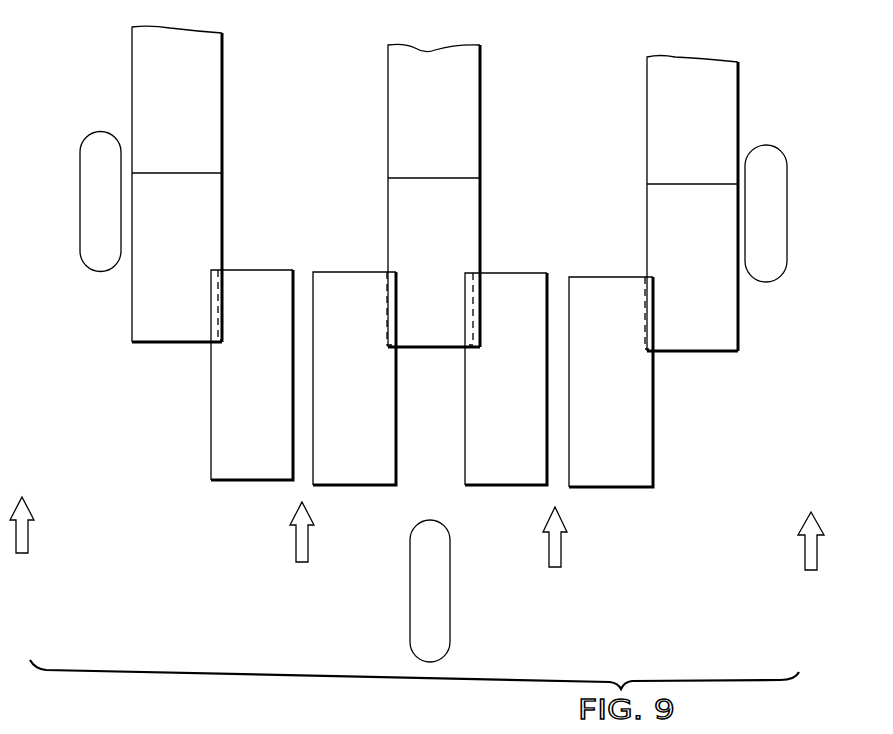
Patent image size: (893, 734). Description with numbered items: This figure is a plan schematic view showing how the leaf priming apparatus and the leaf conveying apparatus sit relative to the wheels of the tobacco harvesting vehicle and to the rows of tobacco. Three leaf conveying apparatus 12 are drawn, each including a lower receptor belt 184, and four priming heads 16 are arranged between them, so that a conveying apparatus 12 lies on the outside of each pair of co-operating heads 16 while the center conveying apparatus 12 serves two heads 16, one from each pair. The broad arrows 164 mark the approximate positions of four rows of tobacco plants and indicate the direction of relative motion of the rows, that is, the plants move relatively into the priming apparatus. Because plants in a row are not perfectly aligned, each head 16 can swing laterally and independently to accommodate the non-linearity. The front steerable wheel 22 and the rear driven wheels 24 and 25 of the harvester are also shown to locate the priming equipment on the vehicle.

The leaf conveying apparatus 12 is at (205, 128).
The lower receptor belt 184 is at (190, 251).
The leaf priming apparatus (priming heads) 16 is at (262, 410).
The rear driven wheel 25 is at (88, 258).
The rear driven wheel 24 is at (777, 256).
The front steerable wheel 22 is at (442, 608).
The broad arrows 164 is at (28, 545).